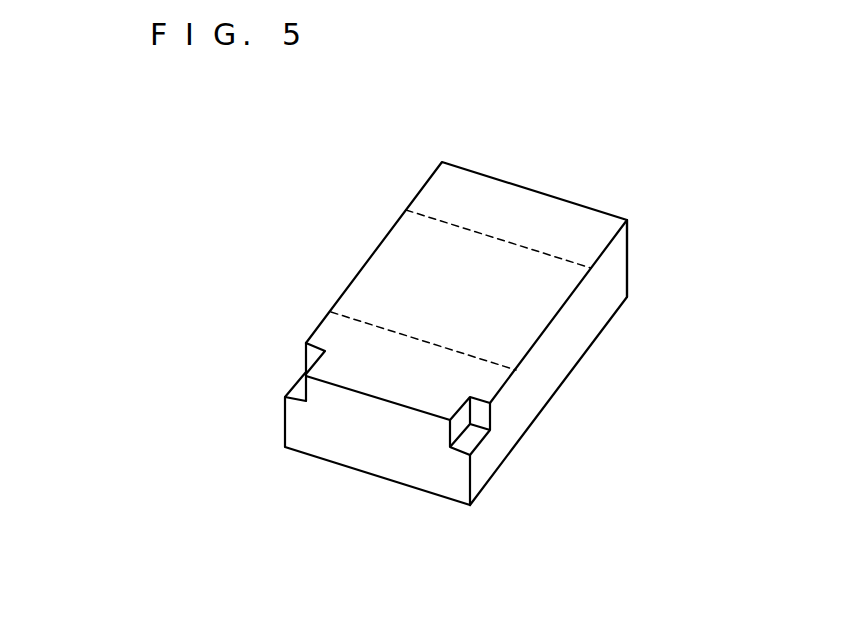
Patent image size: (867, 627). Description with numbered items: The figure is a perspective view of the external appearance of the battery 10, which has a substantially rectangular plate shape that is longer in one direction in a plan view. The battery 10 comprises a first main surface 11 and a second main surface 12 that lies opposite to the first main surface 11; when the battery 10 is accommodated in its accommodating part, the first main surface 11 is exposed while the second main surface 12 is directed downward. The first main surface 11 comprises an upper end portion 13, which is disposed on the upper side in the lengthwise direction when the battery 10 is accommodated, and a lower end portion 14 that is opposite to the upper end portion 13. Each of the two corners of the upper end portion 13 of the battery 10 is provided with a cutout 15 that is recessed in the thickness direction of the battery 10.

The battery 10 is at (440, 316).
The first main surface 11 is at (543, 305).
The second main surface 12 is at (570, 373).
The upper end portion 13 is at (412, 385).
The lower end portion 14 is at (580, 222).
The cutout 15 is at (293, 372).